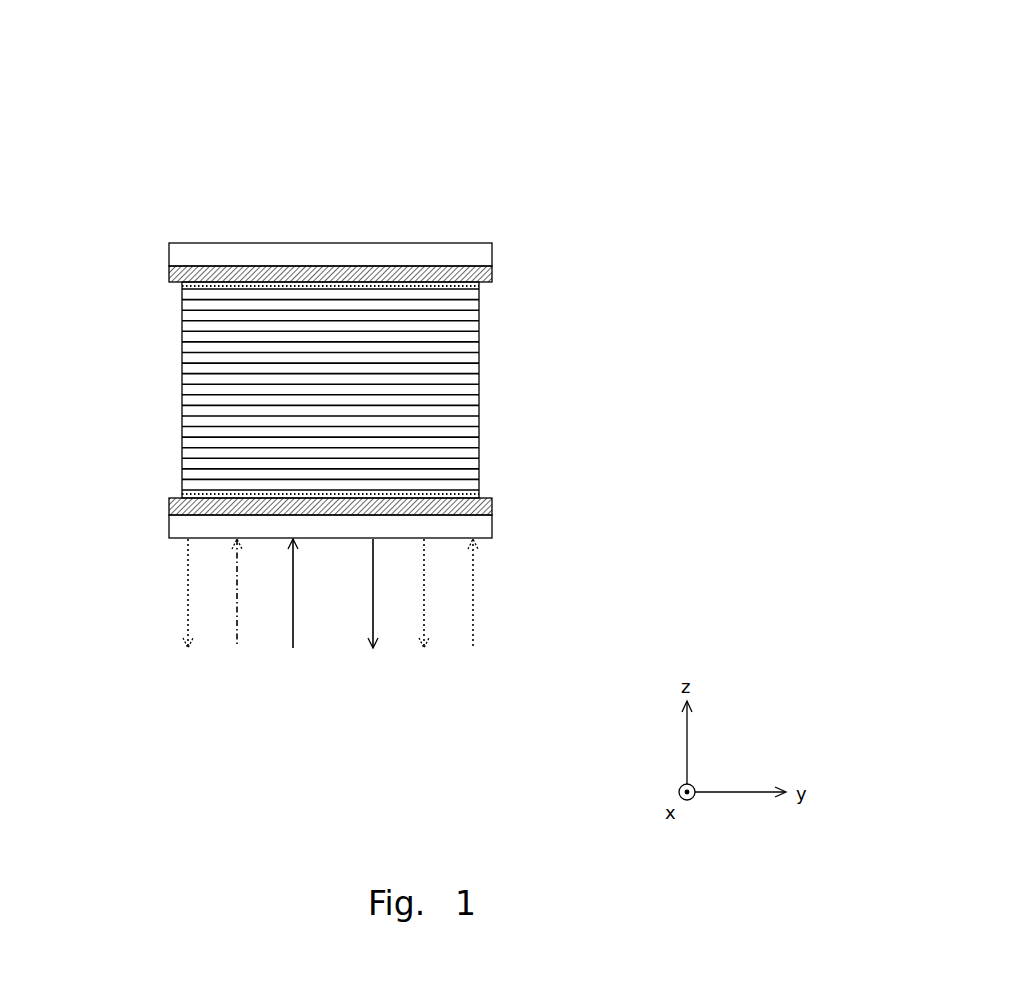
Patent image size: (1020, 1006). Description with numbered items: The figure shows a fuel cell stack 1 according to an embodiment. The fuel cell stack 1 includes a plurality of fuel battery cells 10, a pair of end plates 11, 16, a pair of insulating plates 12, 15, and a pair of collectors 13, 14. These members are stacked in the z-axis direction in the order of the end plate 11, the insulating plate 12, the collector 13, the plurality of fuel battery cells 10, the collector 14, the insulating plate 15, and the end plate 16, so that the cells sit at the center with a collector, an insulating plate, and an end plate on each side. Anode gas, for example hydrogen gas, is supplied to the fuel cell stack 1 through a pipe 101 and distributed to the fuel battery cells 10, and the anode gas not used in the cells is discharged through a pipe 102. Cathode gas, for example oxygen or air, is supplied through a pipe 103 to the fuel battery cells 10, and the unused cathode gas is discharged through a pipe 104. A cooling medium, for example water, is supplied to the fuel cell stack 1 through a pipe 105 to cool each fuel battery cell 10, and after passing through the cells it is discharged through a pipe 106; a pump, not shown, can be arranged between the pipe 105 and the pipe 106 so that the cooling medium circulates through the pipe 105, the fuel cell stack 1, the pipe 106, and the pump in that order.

The fuel cell stack 1 is at (626, 82).
The fuel battery cells 10 is at (480, 412).
The end plate 11 is at (493, 525).
The insulating plate 12 is at (493, 507).
The collector 13 is at (481, 497).
The collector 14 is at (480, 286).
The insulating plate 15 is at (492, 274).
The end plate 16 is at (492, 256).
The pipe 101 is at (475, 612).
The pipe 102 is at (187, 603).
The pipe 103 is at (236, 616).
The pipe 104 is at (425, 607).
The pipe 105 is at (293, 628).
The pipe 106 is at (377, 624).